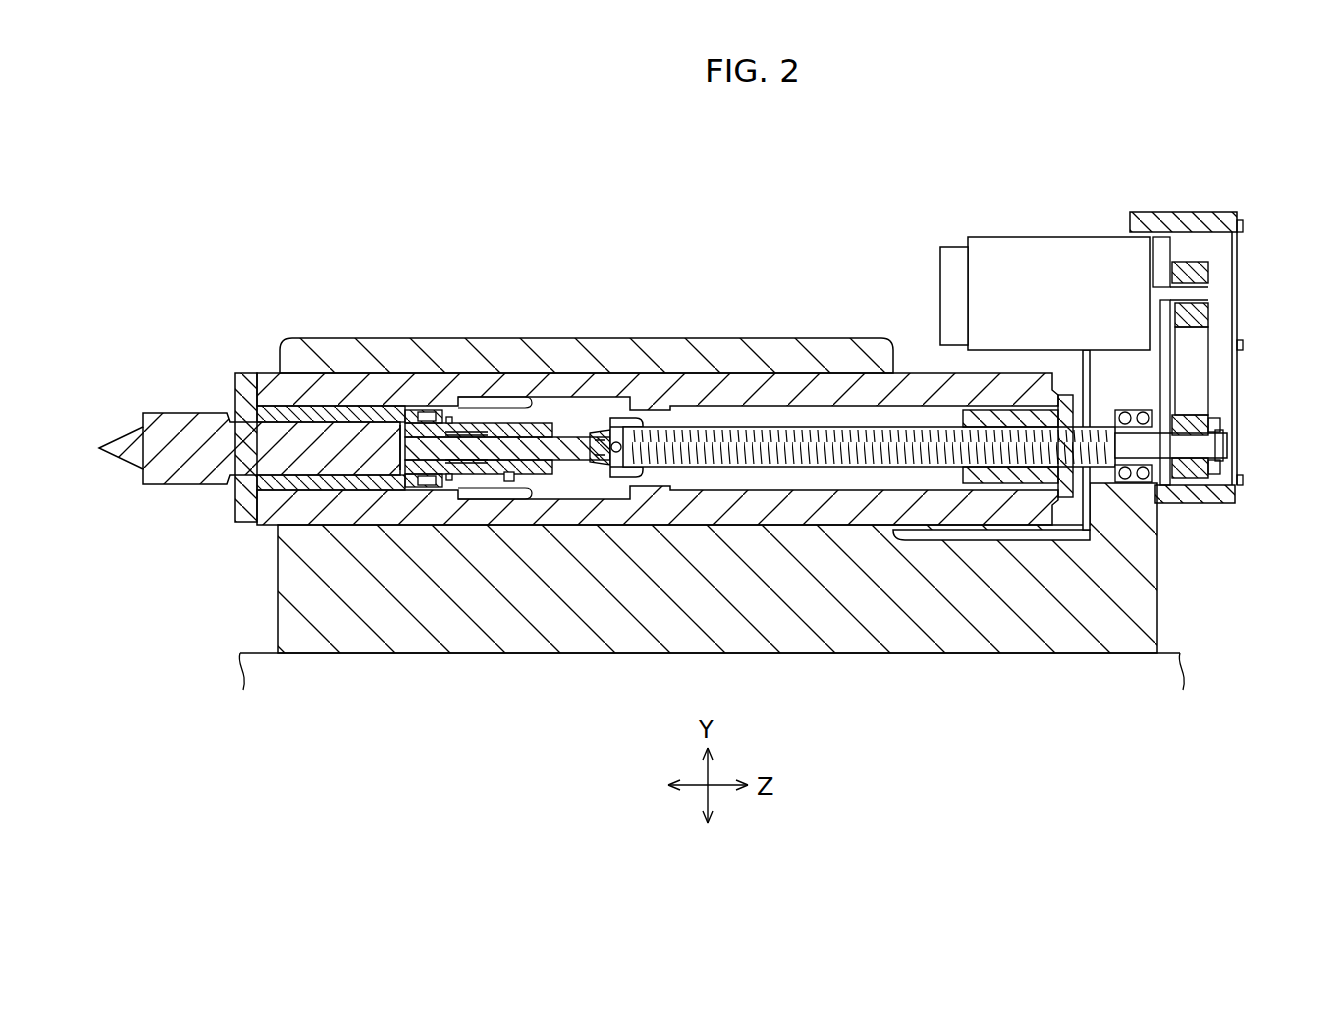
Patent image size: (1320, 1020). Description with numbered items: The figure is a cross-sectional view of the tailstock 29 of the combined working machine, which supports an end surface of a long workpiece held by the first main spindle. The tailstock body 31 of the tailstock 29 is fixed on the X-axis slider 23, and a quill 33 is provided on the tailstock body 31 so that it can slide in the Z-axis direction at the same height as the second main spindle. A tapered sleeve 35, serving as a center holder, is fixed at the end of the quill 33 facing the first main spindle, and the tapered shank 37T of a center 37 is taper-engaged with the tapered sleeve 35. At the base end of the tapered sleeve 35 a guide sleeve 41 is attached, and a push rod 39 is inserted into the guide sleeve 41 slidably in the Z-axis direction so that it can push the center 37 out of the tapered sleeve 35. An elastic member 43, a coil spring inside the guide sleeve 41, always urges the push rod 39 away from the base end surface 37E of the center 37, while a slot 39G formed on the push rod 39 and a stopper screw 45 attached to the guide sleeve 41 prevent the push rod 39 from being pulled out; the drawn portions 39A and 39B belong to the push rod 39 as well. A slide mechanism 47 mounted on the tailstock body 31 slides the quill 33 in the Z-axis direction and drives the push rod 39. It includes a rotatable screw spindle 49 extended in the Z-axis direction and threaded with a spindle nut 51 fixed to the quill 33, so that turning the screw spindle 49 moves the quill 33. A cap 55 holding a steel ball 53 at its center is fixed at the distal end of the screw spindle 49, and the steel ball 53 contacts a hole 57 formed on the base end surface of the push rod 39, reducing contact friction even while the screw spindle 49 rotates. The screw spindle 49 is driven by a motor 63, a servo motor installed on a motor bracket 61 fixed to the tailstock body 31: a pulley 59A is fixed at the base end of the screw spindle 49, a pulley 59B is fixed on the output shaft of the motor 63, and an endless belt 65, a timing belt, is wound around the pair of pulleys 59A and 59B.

The X-axis slider 23 is at (1183, 660).
The tailstock 29 is at (653, 283).
The tailstock body 31 is at (278, 600).
The quill 33 is at (738, 386).
The tapered sleeve 35 is at (338, 413).
The center 37 is at (167, 423).
The tapered shank 37T is at (263, 433).
The base end surface 37E is at (408, 418).
The push rod 39 is at (570, 470).
The shaft hub 39A is at (405, 487).
The shaft end portion 39B is at (608, 437).
The slot 39G is at (503, 477).
The guide sleeve 41 is at (525, 423).
The elastic member 43 is at (438, 480).
The stopper screw 45 is at (472, 487).
The slide mechanism 47 is at (1162, 530).
The screw spindle 49 is at (857, 452).
The spindle nut 51 is at (985, 483).
The steel ball 53 is at (668, 362).
The cap 55 is at (627, 480).
The hole 57 is at (570, 487).
The pulley 59A is at (1212, 412).
The pulley 59B is at (1212, 275).
The motor bracket 61 is at (1152, 372).
The motor 63 is at (1028, 250).
The endless belt 65 is at (1195, 367).